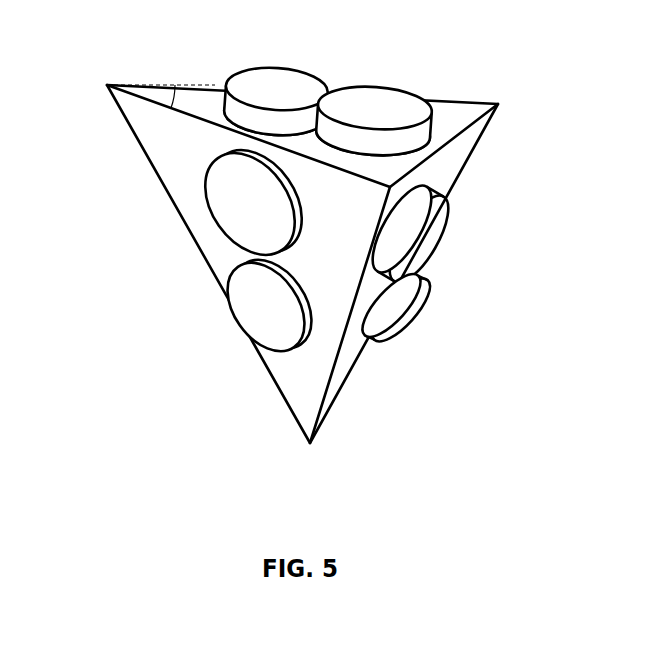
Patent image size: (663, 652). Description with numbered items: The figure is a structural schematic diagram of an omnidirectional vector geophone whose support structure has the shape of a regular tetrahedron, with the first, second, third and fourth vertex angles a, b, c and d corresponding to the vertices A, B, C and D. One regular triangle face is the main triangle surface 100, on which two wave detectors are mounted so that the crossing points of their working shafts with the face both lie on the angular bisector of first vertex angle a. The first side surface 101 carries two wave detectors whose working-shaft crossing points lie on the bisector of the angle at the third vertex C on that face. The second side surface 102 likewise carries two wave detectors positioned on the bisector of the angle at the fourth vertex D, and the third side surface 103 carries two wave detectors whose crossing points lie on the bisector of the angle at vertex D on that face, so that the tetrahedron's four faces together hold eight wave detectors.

The main triangle surface 100 is at (155, 94).
The first side surface 101 is at (357, 342).
The second side surface 102 is at (175, 158).
The third side surface 103 is at (215, 107).